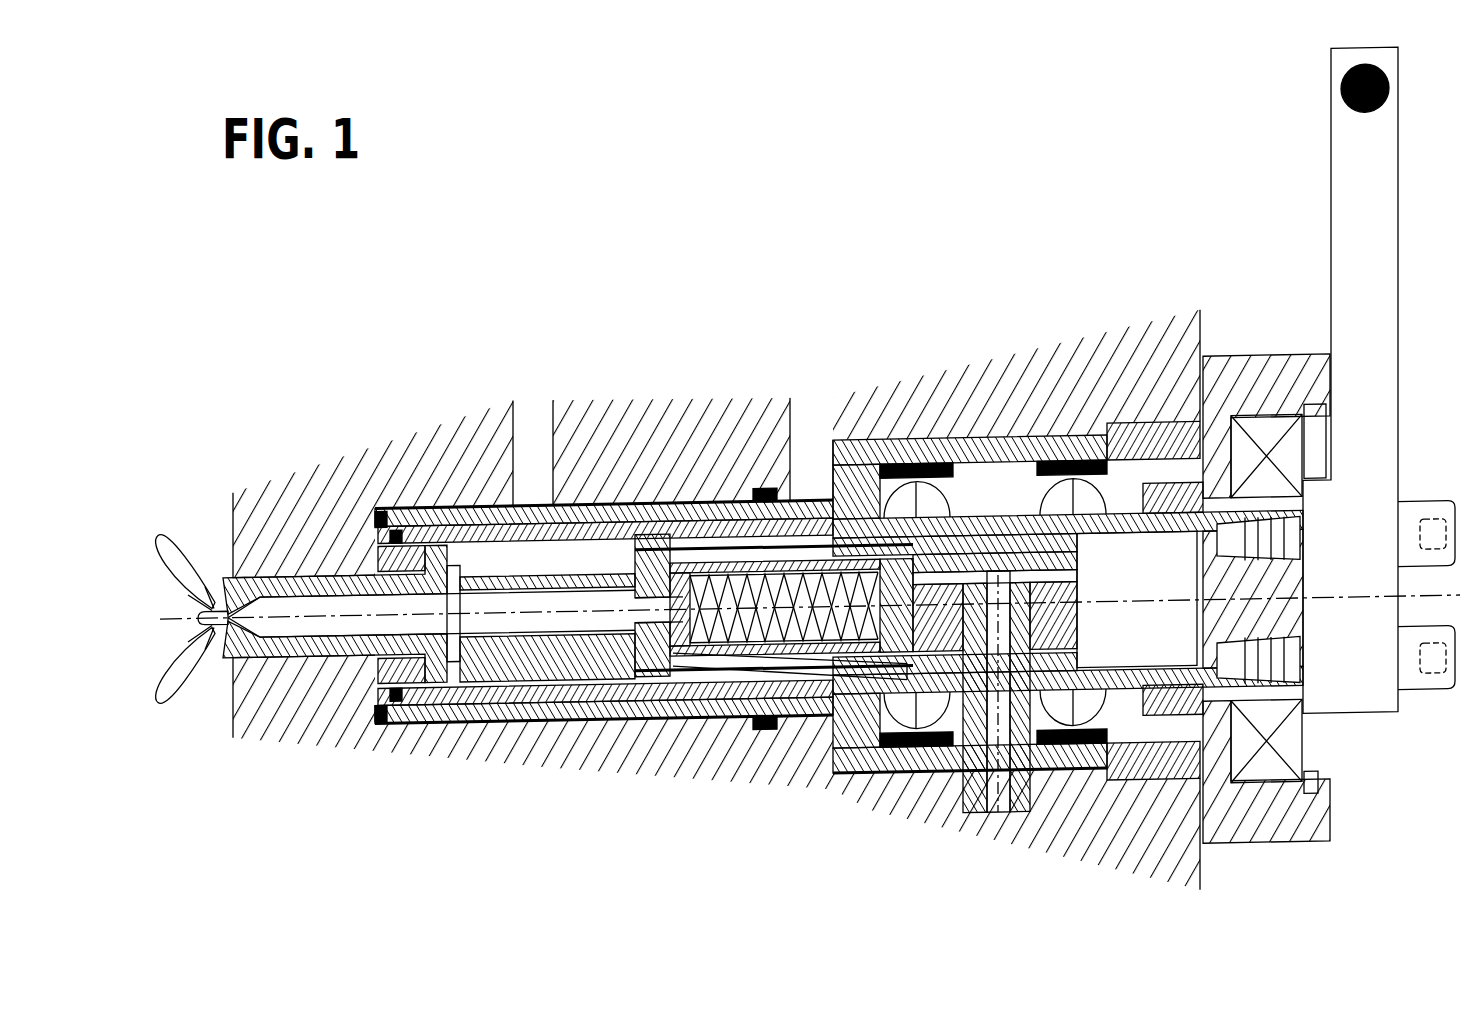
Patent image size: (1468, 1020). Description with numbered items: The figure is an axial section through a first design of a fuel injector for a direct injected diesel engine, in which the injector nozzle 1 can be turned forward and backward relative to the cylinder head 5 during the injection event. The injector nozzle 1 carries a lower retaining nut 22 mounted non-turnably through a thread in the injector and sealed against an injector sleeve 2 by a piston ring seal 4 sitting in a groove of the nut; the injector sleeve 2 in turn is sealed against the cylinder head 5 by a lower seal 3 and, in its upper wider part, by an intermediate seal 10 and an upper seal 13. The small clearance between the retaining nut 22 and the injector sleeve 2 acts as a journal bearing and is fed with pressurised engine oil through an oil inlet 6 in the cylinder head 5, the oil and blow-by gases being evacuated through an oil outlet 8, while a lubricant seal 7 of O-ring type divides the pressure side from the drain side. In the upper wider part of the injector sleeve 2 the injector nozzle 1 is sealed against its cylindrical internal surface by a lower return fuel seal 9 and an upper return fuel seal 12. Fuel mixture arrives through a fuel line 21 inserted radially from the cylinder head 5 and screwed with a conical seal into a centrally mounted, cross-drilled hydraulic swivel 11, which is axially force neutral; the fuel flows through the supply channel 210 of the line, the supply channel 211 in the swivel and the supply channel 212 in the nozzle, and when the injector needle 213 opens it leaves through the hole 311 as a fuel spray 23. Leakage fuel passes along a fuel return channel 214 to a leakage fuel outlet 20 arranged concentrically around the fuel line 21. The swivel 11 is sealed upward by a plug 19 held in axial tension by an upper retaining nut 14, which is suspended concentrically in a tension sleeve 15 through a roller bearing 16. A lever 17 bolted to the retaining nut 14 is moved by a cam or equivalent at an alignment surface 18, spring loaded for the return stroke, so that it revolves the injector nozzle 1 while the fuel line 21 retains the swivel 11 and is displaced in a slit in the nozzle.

The injector nozzle 1 is at (230, 559).
The hole 311 is at (200, 600).
The injector sleeve 2 is at (433, 493).
The lower seal 3 is at (380, 500).
The piston ring seal 4 is at (382, 527).
The cylinder head 5 is at (270, 542).
The oil inlet 6 is at (540, 421).
The lubricant seal 7 is at (762, 484).
The oil outlet 8 is at (812, 428).
The lower return fuel seal 9 is at (898, 433).
The intermediate seal 10 is at (930, 416).
The swivel 11 is at (1000, 455).
The upper return fuel seal 12 is at (1048, 470).
The upper seal 13 is at (1058, 418).
The upper retaining nut 14 is at (1178, 493).
The tension sleeve 15 is at (1222, 382).
The roller bearing 16 is at (1267, 435).
The lever 17 is at (1352, 227).
The alignment surface 18 is at (1343, 99).
The plug 19 is at (1107, 670).
The leakage fuel outlet 20 is at (1022, 765).
The fuel line 21 is at (975, 805).
The supply channel 210 is at (992, 812).
The supply channel 211 is at (853, 774).
The supply channel 212 is at (722, 580).
The injector needle 213 is at (277, 615).
The fuel return channel 214 is at (822, 660).
The lower retaining nut 22 is at (505, 712).
The fuel spray 23 is at (173, 677).